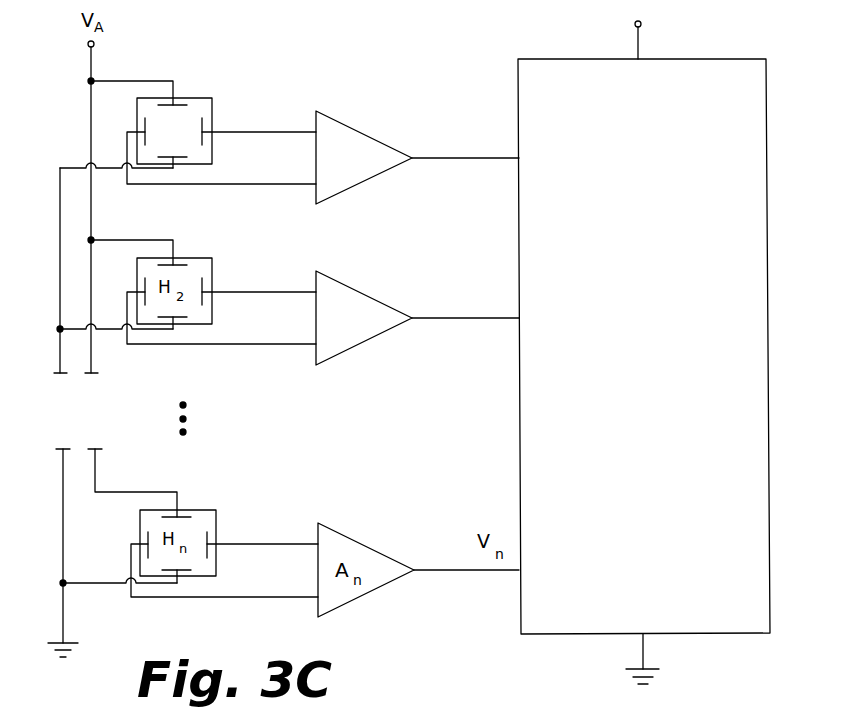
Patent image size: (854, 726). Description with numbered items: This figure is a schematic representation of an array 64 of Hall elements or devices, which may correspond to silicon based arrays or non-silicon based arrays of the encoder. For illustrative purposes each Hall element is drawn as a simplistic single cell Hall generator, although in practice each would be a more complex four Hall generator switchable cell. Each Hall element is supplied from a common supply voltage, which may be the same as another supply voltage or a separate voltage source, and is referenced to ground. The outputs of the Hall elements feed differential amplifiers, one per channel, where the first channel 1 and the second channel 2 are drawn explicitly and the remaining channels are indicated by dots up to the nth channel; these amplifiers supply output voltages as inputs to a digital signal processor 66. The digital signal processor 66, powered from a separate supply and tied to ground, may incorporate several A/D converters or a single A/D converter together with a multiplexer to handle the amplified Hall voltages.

The array of Hall elements 64 is at (208, 93).
The digital signal processor 66 is at (517, 84).
The first amplifier A1 / output V1 1 is at (417, 157).
The second amplifier A2 / output V2 2 is at (417, 318).